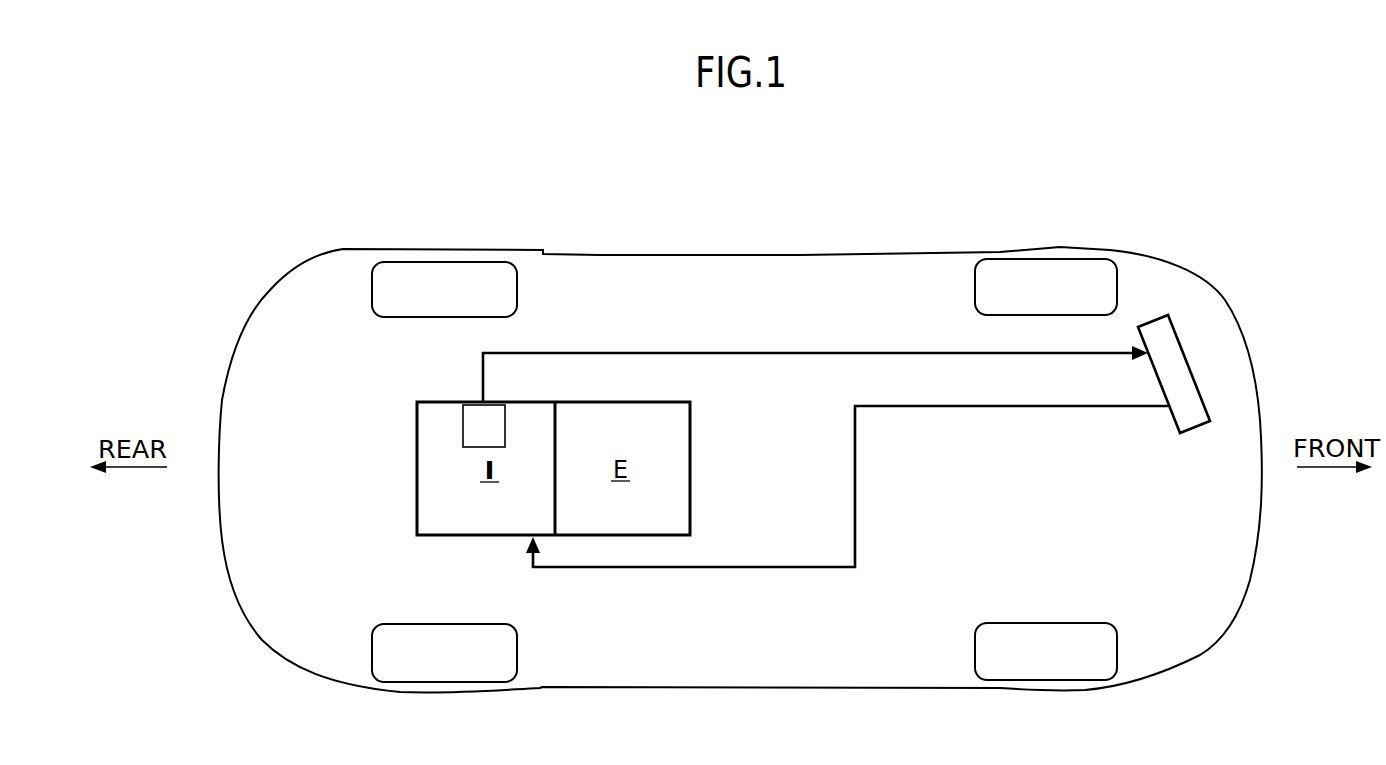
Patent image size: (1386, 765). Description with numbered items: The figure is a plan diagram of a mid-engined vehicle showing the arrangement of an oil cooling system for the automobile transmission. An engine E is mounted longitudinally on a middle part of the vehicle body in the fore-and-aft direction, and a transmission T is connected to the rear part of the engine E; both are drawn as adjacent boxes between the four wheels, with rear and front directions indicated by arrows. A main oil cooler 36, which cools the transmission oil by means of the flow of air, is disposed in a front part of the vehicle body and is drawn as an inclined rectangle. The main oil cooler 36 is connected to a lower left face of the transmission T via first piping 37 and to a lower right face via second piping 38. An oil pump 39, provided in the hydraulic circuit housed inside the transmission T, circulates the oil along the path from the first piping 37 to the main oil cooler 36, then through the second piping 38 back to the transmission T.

The main oil cooler 36 is at (1177, 367).
The first piping 37 is at (758, 352).
The second piping 38 is at (757, 570).
The oil pump 39 is at (498, 440).